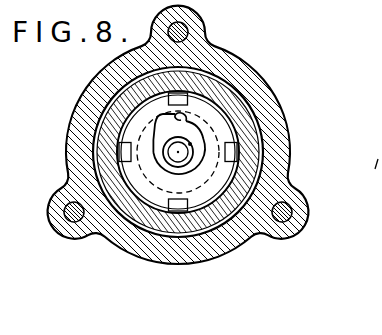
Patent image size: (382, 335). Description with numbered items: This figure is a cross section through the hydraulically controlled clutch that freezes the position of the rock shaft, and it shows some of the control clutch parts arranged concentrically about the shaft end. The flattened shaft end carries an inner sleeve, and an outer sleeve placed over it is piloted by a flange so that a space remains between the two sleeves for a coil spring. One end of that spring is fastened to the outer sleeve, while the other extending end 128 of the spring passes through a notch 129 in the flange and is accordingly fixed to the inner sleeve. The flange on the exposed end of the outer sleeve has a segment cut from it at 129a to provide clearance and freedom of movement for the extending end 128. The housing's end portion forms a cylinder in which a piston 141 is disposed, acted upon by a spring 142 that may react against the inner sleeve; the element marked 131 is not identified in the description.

The extending end of the spring 128 is at (249, 83).
The notch 129 is at (157, 123).
The cut segment 129a is at (172, 117).
The ring 131 is at (262, 132).
The piston 141 is at (105, 152).
The spring 142 is at (183, 160).